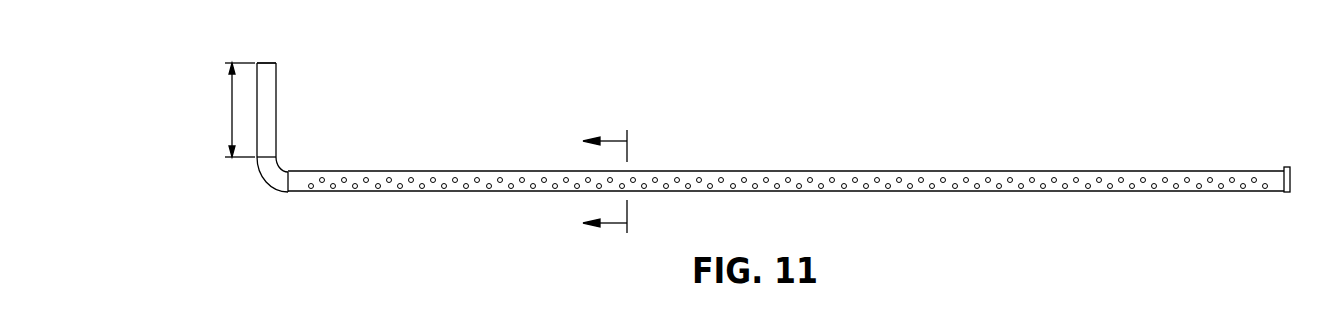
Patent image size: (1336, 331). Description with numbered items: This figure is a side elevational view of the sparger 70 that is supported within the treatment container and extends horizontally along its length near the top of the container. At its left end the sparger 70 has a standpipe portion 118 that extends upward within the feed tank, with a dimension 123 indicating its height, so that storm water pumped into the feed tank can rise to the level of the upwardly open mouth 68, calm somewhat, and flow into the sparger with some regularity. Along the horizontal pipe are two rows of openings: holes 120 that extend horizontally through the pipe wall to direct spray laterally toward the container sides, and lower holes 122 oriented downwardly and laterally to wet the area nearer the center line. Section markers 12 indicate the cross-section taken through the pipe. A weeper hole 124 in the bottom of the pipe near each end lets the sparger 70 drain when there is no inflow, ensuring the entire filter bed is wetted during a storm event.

The section line 12- 12 is at (611, 183).
The mouth 68 is at (268, 62).
The sparger 70 is at (787, 171).
The standpipe portion 118 is at (277, 112).
The holes 120 is at (678, 177).
The holes 122 is at (533, 190).
The height of riser section 123 is at (231, 110).
The weeper hole 124 is at (297, 193).